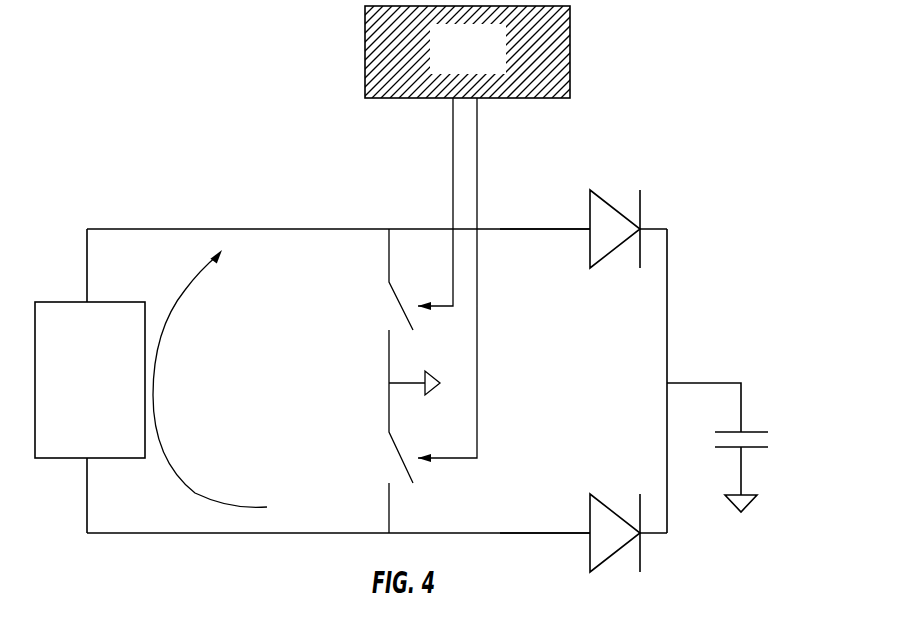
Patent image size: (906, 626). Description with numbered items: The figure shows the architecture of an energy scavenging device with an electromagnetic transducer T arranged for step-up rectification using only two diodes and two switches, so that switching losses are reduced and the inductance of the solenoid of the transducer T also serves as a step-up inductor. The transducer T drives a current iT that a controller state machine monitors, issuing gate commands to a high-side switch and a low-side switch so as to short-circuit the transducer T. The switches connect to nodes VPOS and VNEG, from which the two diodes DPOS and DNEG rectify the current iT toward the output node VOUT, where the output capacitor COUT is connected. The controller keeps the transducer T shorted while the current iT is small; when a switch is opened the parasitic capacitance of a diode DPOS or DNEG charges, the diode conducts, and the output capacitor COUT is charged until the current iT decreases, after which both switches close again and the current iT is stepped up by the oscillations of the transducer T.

The transducer T is at (90, 380).
The current flowing throughout the transducer iT is at (210, 378).
The diode DPOS is at (615, 245).
The diode DNEG is at (615, 516).
The positive node VPOS is at (545, 214).
The negative node VNEG is at (545, 518).
The output node VOUT is at (704, 391).
The output capacitor COUT is at (759, 457).